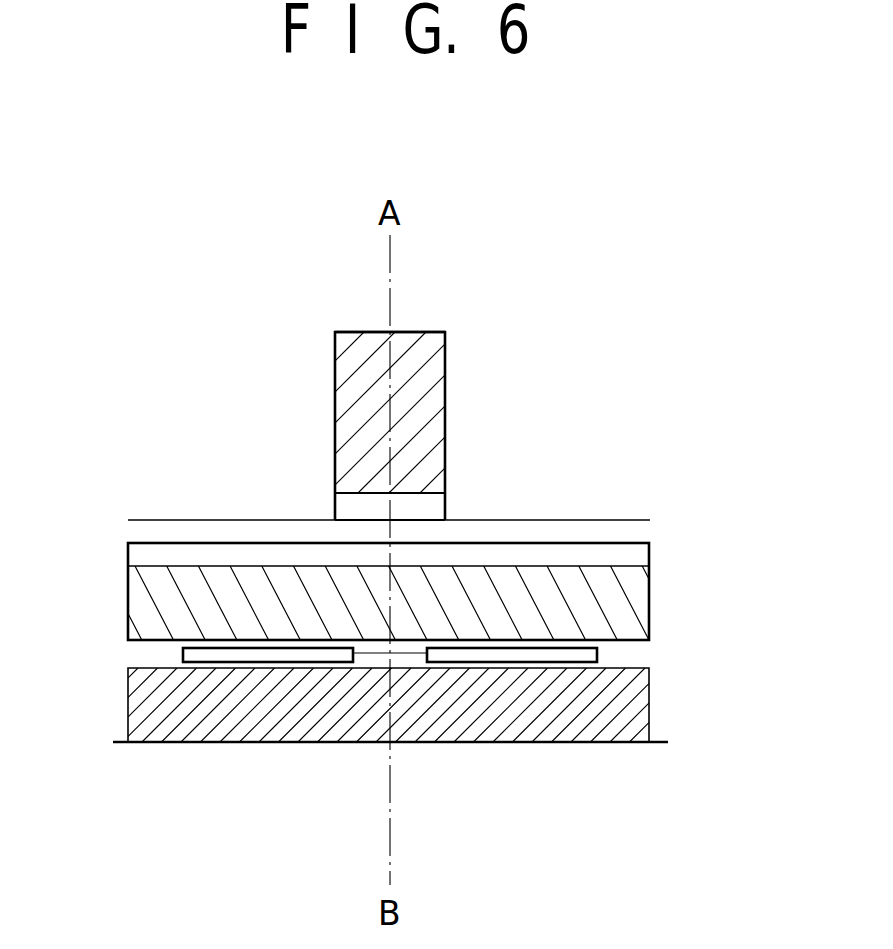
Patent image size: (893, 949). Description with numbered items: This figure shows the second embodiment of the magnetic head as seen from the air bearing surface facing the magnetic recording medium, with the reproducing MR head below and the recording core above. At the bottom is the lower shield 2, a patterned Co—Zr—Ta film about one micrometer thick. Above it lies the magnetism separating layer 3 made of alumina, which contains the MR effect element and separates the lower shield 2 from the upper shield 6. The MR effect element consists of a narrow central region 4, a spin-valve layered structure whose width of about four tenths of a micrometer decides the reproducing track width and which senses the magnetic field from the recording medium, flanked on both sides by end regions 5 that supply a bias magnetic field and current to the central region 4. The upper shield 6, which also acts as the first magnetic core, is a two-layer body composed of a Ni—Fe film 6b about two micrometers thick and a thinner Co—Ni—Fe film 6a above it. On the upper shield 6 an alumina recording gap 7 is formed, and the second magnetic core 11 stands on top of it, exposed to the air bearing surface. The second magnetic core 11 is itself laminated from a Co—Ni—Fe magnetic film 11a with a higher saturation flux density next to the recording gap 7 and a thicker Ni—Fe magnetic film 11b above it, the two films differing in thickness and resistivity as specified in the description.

The lower shield 2 is at (220, 718).
The magnetism separating layer 3 is at (148, 655).
The central region 4 is at (407, 655).
The end regions 5 is at (597, 652).
The upper shield 6 is at (650, 619).
The Co—Ni—Fe film 6a is at (643, 557).
The Ni—Fe film 6b is at (637, 596).
The recording gap 7 is at (598, 533).
The second magnetic core 11 is at (432, 410).
The magnetic film 11a is at (345, 507).
The magnetic film 11b is at (355, 428).